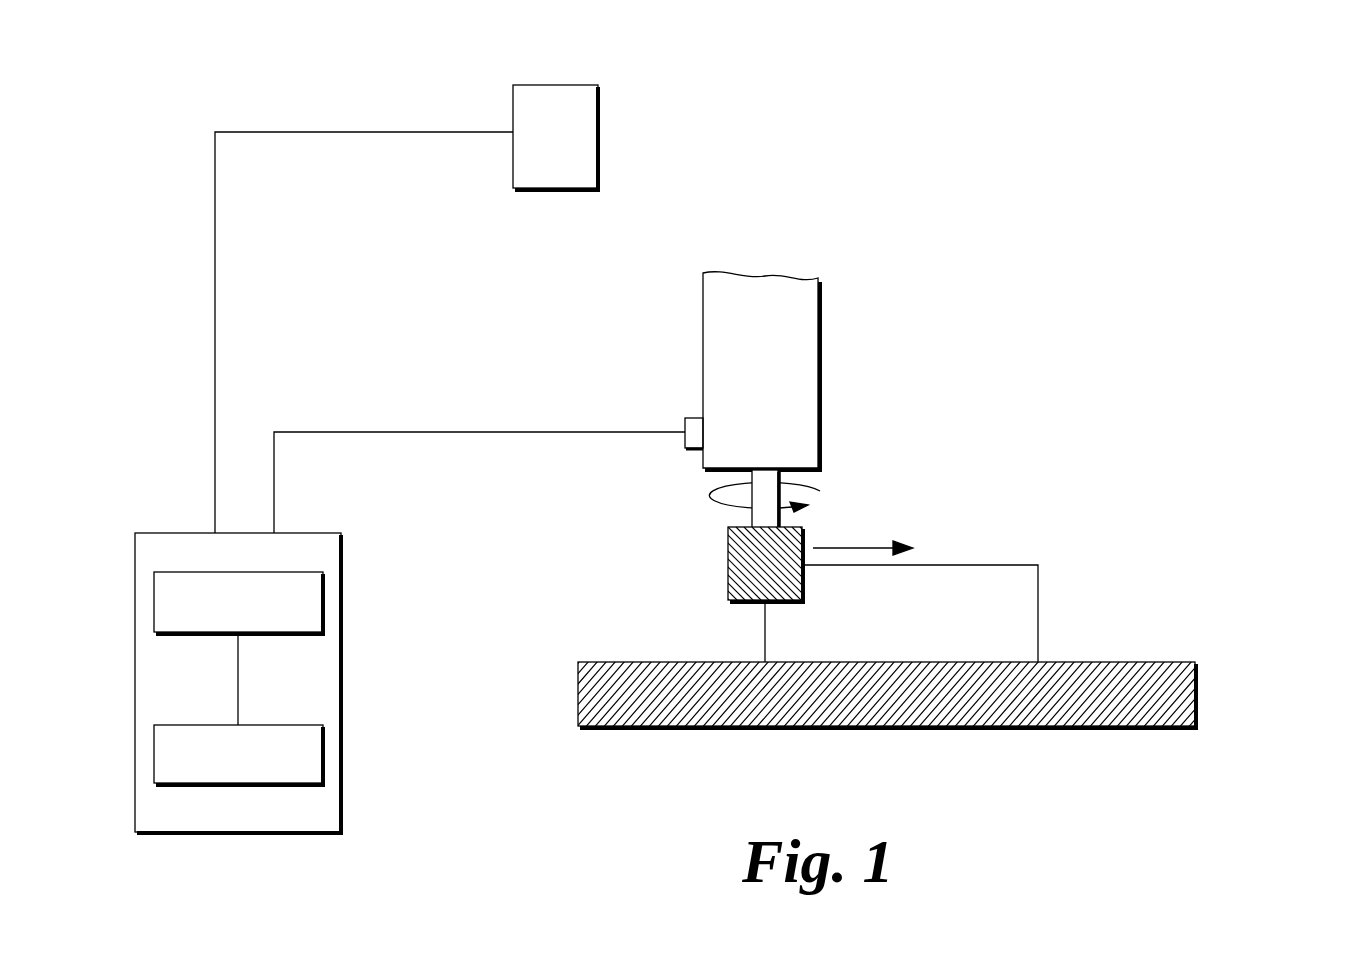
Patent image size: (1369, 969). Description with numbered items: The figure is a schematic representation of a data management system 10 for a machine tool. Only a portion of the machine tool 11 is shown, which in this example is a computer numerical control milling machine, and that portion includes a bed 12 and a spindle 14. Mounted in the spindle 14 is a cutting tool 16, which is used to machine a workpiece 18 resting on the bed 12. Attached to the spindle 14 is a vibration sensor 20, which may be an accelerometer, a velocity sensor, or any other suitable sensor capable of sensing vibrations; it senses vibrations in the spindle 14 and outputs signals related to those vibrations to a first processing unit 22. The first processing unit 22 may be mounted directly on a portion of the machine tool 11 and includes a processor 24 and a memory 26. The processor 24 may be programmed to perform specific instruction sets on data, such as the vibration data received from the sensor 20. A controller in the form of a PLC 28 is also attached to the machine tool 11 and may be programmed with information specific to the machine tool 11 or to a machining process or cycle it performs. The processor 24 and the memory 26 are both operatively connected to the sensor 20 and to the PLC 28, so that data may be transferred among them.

The data management system 10 is at (1168, 358).
The machine tool 11 is at (1167, 645).
The bed 12 is at (1198, 690).
The spindle 14 is at (822, 328).
The cutting tool 16 is at (727, 565).
The workpiece 18 is at (1040, 585).
The vibration sensor 20 is at (693, 418).
The first processing unit 22 is at (344, 808).
The processor 24 is at (325, 598).
The memory 26 is at (325, 748).
The PLC 28 is at (600, 133).